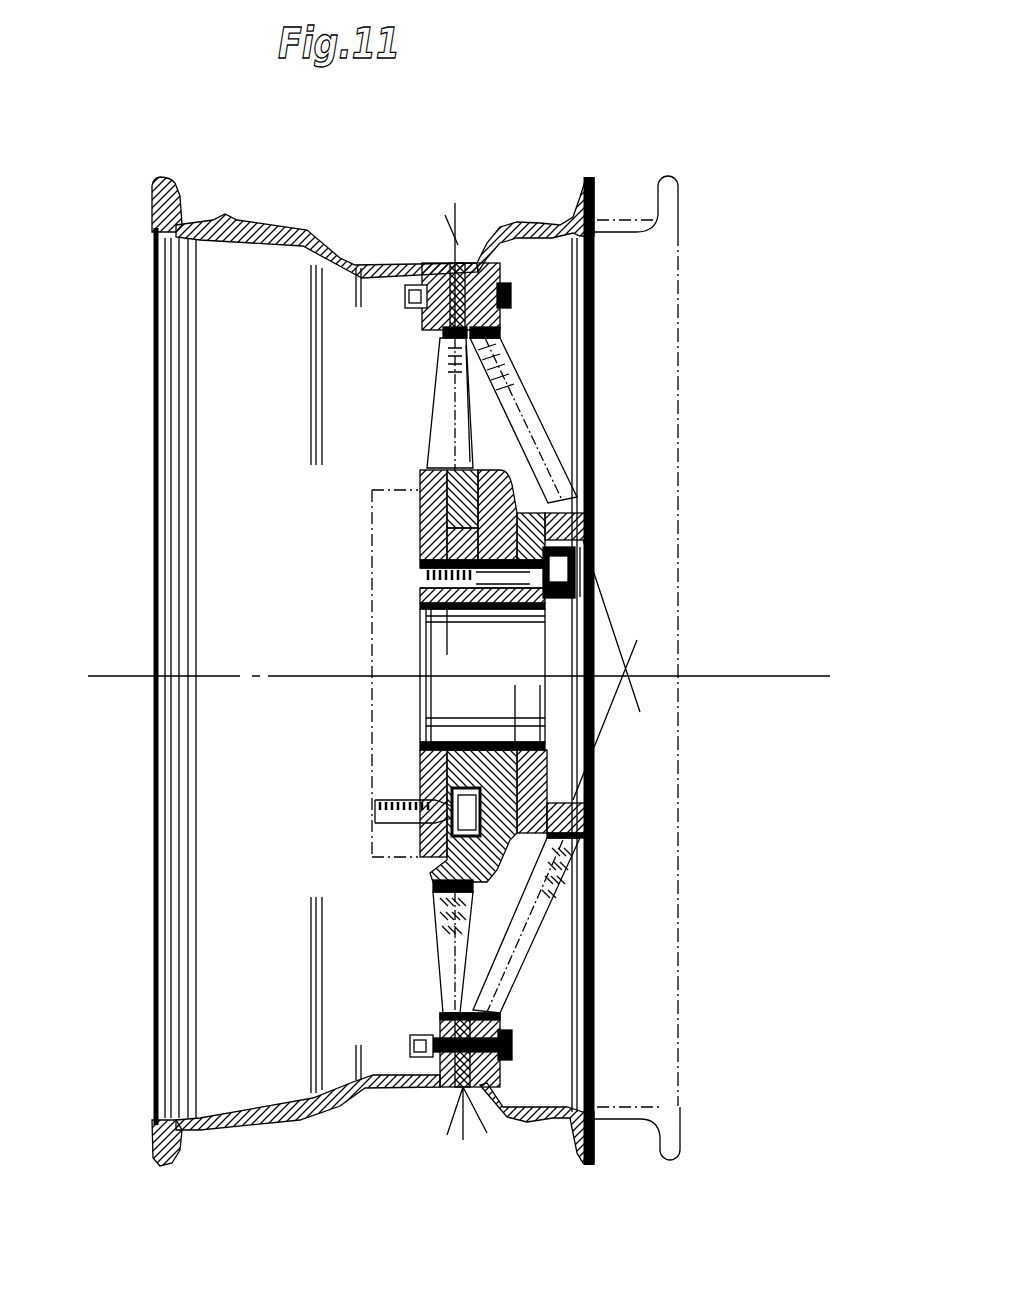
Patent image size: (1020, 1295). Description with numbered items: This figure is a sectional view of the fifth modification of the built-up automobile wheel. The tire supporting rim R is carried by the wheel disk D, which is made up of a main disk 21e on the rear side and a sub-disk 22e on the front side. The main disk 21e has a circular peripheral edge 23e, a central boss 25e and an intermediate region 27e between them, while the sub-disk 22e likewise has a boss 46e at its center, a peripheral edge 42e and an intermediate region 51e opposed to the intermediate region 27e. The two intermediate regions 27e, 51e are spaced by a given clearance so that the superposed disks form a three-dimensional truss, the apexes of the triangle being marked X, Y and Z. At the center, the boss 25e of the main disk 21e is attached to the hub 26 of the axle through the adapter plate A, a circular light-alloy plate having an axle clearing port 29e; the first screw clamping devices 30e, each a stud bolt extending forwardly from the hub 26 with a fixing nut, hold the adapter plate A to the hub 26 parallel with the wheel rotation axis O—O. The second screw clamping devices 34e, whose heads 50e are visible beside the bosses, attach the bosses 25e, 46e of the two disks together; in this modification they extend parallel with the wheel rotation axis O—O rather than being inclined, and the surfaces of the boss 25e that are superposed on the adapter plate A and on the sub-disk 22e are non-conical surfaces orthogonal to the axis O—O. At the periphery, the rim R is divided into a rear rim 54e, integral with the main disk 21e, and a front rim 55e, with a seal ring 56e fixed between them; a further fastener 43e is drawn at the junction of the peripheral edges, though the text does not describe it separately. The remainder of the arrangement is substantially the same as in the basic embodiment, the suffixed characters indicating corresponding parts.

The tire supporting rim R is at (150, 905).
The main disk 21e is at (428, 409).
The sub-disk 22e is at (562, 443).
The circular peripheral edge 23e is at (432, 312).
The boss 25e is at (440, 470).
The hub 26 is at (372, 727).
The intermediate region 27e is at (433, 932).
The axle clearing port 29e is at (418, 617).
The first screw clamping devices 30e is at (375, 810).
The second screw clamping devices 34e is at (482, 615).
The peripheral edge 42e is at (506, 266).
The lower rim fastening bolt 43e is at (410, 1047).
The boss 46e is at (597, 810).
The head 50e is at (560, 602).
The intermediate region 51e is at (548, 933).
The rear rim 54e is at (305, 1110).
The front rim 55e is at (550, 1123).
The seal ring 56e is at (440, 1090).
The adapter plate A is at (430, 513).
The wheel disk D is at (652, 748).
The triangle apex X is at (446, 246).
The triangle apex Y is at (452, 674).
The triangle apex Z is at (630, 668).
The wheel rotation axis O is at (453, 678).